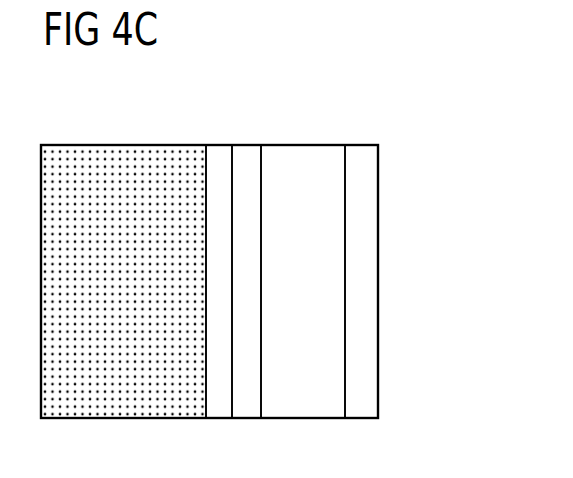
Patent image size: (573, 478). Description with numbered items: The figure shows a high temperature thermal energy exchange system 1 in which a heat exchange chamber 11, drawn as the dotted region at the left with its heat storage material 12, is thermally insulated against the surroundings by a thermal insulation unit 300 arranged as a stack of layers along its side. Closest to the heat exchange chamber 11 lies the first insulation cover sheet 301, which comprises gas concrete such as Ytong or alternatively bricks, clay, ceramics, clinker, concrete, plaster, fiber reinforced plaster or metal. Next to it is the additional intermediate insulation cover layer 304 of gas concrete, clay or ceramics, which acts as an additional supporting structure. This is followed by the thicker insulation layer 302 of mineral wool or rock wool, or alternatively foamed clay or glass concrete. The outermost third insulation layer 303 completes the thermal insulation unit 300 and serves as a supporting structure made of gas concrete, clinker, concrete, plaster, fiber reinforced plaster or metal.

The high temperature thermal energy exchange system 1 is at (432, 103).
The heat exchange chamber 11 is at (125, 153).
The active region 12 is at (80, 153).
The thermal insulation unit 300 is at (420, 285).
The first insulation cover sheet 301 is at (212, 153).
The insulation layer 302 is at (308, 157).
The third insulation layer 303 is at (358, 157).
The additional intermediate insulation cover layer 304 is at (243, 155).